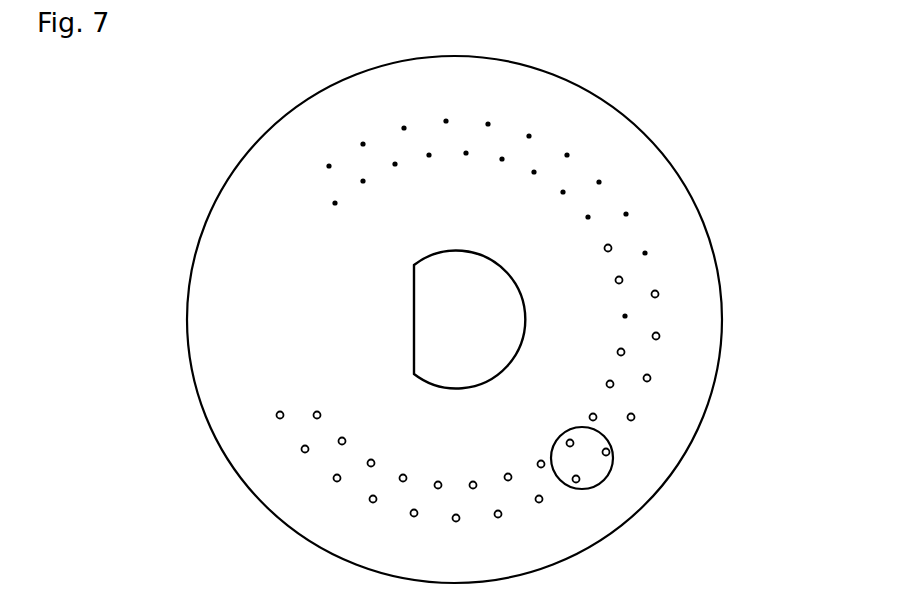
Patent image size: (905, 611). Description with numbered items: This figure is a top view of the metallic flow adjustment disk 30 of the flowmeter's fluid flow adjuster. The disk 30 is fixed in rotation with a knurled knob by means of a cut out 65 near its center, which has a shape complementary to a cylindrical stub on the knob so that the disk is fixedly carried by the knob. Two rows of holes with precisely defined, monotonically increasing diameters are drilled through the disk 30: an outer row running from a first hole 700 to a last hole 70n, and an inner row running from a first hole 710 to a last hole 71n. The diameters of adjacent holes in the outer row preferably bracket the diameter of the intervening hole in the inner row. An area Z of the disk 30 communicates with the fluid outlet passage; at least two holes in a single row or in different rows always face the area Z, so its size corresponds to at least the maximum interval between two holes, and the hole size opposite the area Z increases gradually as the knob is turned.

The metallic flow adjustment disk 30 is at (193, 267).
The cut out 65 is at (517, 286).
The first hole of row 70 700 is at (298, 198).
The first hole of row 71 710 is at (315, 231).
The last hole of row 70 70n is at (277, 415).
The last hole of row 71 71n is at (314, 413).
The area Z is at (599, 485).